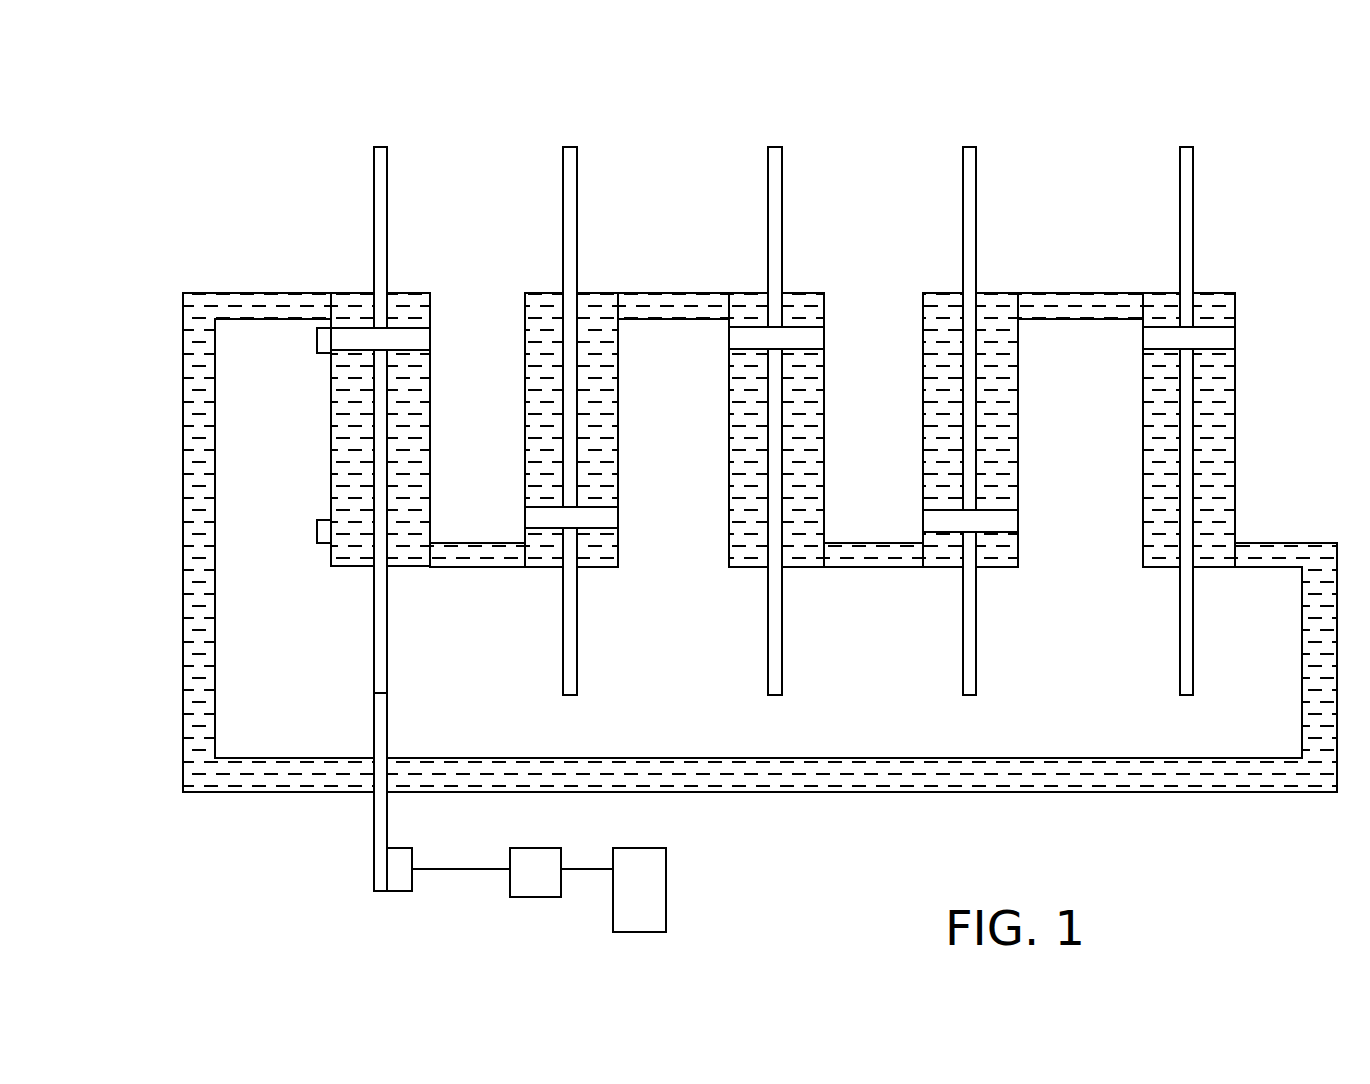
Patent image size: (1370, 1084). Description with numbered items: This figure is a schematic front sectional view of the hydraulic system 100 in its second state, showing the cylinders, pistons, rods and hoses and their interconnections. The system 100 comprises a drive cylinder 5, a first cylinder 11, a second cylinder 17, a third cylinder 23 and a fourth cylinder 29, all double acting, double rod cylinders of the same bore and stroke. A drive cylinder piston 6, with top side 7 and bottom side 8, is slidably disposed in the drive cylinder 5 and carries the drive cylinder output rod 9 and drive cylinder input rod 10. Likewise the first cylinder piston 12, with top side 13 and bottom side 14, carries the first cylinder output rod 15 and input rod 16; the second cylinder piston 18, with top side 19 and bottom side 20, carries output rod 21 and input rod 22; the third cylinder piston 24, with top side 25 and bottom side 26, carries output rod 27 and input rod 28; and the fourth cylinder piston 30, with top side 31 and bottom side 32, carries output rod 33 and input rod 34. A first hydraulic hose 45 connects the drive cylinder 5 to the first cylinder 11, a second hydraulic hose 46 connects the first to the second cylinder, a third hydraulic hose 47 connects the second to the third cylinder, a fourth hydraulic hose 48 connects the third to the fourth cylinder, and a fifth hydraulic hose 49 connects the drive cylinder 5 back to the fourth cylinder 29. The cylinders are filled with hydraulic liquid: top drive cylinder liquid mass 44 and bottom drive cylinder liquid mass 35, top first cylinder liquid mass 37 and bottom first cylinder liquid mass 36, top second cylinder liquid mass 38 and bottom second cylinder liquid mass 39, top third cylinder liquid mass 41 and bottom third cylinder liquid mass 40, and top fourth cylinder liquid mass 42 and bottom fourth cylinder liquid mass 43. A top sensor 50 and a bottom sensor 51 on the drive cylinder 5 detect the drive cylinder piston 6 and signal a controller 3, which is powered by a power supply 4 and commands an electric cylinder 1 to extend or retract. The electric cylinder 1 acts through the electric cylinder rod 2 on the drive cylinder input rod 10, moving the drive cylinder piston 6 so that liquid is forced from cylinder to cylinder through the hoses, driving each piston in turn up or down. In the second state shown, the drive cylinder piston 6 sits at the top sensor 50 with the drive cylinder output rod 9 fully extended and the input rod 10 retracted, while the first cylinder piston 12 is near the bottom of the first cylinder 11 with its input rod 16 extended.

The system 100 is at (280, 135).
The electric cylinder 1 is at (400, 892).
The electric cylinder rod 2 is at (386, 832).
The controller 3 is at (528, 848).
The power supply 4 is at (666, 892).
The drive cylinder 5 is at (331, 453).
The drive cylinder piston 6 is at (407, 333).
The top side of drive cylinder piston 7 is at (397, 328).
The bottom side of drive cylinder piston 8 is at (357, 352).
The drive cylinder output rod 9 is at (374, 147).
The drive cylinder input rod 10 is at (374, 655).
The first cylinder 11 is at (592, 293).
The first cylinder piston 12 is at (548, 520).
The top side of first cylinder piston 13 is at (553, 507).
The bottom side of first cylinder piston 14 is at (600, 528).
The first cylinder output rod 15 is at (563, 147).
The first cylinder input rod 16 is at (565, 695).
The second cylinder 17 is at (800, 290).
The second cylinder piston 18 is at (797, 340).
The top side of second cylinder piston 19 is at (763, 303).
The bottom side of second cylinder piston 20 is at (743, 350).
The second cylinder output rod 21 is at (770, 147).
The second cylinder input rod 22 is at (772, 695).
The third cylinder 23 is at (992, 290).
The third cylinder piston 24 is at (938, 517).
The top side of third cylinder piston 25 is at (958, 510).
The bottom side of third cylinder piston 26 is at (998, 535).
The third cylinder output rod 27 is at (963, 147).
The third cylinder input rod 28 is at (965, 695).
The fourth cylinder 29 is at (1217, 290).
The fourth cylinder piston 30 is at (1220, 333).
The top side of fourth cylinder piston 31 is at (1198, 293).
The bottom side of fourth cylinder piston 32 is at (1150, 348).
The fourth cylinder output rod 33 is at (1183, 147).
The fourth cylinder input rod 34 is at (1185, 695).
The bottom drive cylinder liquid mass 35 is at (347, 485).
The bottom first cylinder liquid mass 36 is at (543, 553).
The top first cylinder liquid mass 37 is at (545, 300).
The top second cylinder liquid mass 38 is at (758, 303).
The bottom second cylinder liquid mass 39 is at (737, 553).
The bottom third cylinder liquid mass 40 is at (1000, 547).
The top third cylinder liquid mass 41 is at (940, 315).
The top fourth cylinder liquid mass 42 is at (1173, 308).
The bottom fourth cylinder liquid mass 43 is at (1153, 550).
The top drive cylinder liquid mass 44 is at (343, 300).
The first hydraulic hose 45 is at (442, 565).
The second hydraulic hose 46 is at (622, 300).
The third hydraulic hose 47 is at (830, 575).
The fourth hydraulic hose 48 is at (1030, 290).
The fifth hydraulic hose 49 is at (852, 793).
The top sensor 50 is at (323, 340).
The bottom sensor 51 is at (325, 537).